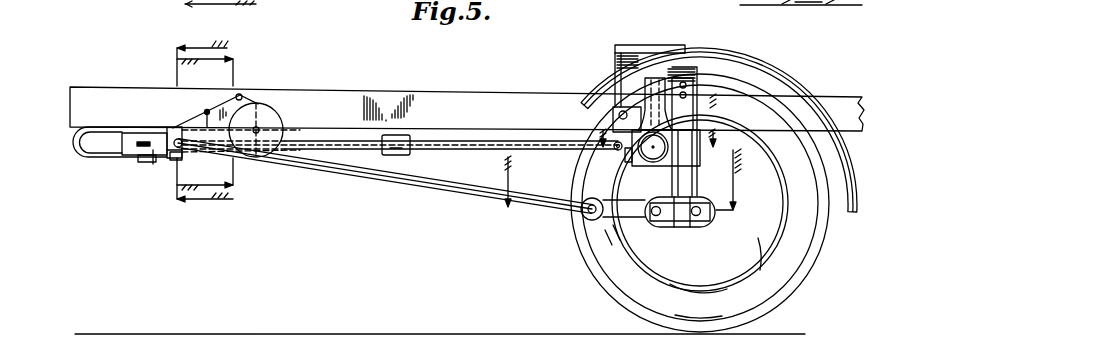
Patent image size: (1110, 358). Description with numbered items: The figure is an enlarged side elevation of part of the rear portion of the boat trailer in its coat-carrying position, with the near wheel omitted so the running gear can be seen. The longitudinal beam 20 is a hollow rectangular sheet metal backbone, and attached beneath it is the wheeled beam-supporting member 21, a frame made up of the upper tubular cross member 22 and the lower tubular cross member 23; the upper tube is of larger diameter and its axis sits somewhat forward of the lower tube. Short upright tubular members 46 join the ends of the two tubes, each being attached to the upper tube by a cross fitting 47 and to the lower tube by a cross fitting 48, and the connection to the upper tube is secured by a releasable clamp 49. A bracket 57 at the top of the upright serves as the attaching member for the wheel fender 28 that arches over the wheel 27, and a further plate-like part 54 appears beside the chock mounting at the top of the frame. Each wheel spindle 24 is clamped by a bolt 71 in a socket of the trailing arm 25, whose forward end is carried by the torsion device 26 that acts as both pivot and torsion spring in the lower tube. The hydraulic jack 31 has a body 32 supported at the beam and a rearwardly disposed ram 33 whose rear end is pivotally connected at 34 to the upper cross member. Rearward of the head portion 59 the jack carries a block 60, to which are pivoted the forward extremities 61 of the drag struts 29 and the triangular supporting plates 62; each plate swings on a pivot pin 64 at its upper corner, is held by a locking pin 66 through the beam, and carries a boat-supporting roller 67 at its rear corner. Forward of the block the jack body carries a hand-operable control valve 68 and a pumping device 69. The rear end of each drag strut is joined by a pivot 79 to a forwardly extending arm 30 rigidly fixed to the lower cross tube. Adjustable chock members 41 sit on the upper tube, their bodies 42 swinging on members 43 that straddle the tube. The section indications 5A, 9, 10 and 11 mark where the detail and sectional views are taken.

The longitudinal beam 20 is at (459, 103).
The wheeled beam-supporting member 21 is at (678, 235).
The upper tubular cross member 22 is at (653, 163).
The lower tubular cross member 23 is at (653, 218).
The wheel spindle 24 is at (701, 218).
The trailing arm 25 is at (693, 238).
The torsion device 26 is at (650, 218).
The wheel 27 is at (610, 293).
The wheel fender 28 is at (794, 88).
The drag strut 29 is at (429, 183).
The forwardly extending arm 30 is at (588, 215).
The hydraulic jack 31 is at (321, 141).
The jack body 32 is at (341, 149).
The ram 33 is at (498, 141).
The ram pivotal connection 34 is at (600, 137).
The adjustable chock member 41 is at (648, 45).
The chock body 42 is at (672, 45).
The chock carrying member 43 is at (692, 80).
The upright tubular member 46 is at (695, 103).
The upper cross fitting 47 is at (698, 158).
The lower cross fitting 48 is at (676, 232).
The releasable clamp 49 is at (622, 157).
The side plate 54 is at (632, 108).
The bracket 57 is at (667, 104).
The head portion 59 is at (99, 146).
The block 60 is at (169, 127).
The forward extremity of strut 61 is at (168, 160).
The supporting plate 62 is at (246, 99).
The pivot pin 64 is at (241, 94).
The locking pin 66 is at (206, 117).
The boat-supporting roller 67 is at (268, 112).
The hand-operable control valve 68 is at (143, 163).
The pumping device 69 is at (140, 136).
The bolt 71 is at (716, 221).
The pivot 79 is at (590, 179).
The section line 9- 9 is at (627, 179).
The section line 10- 10 is at (205, 125).
The section line 11- 11 is at (205, 123).
The section line 5A- 5A is at (659, 120).